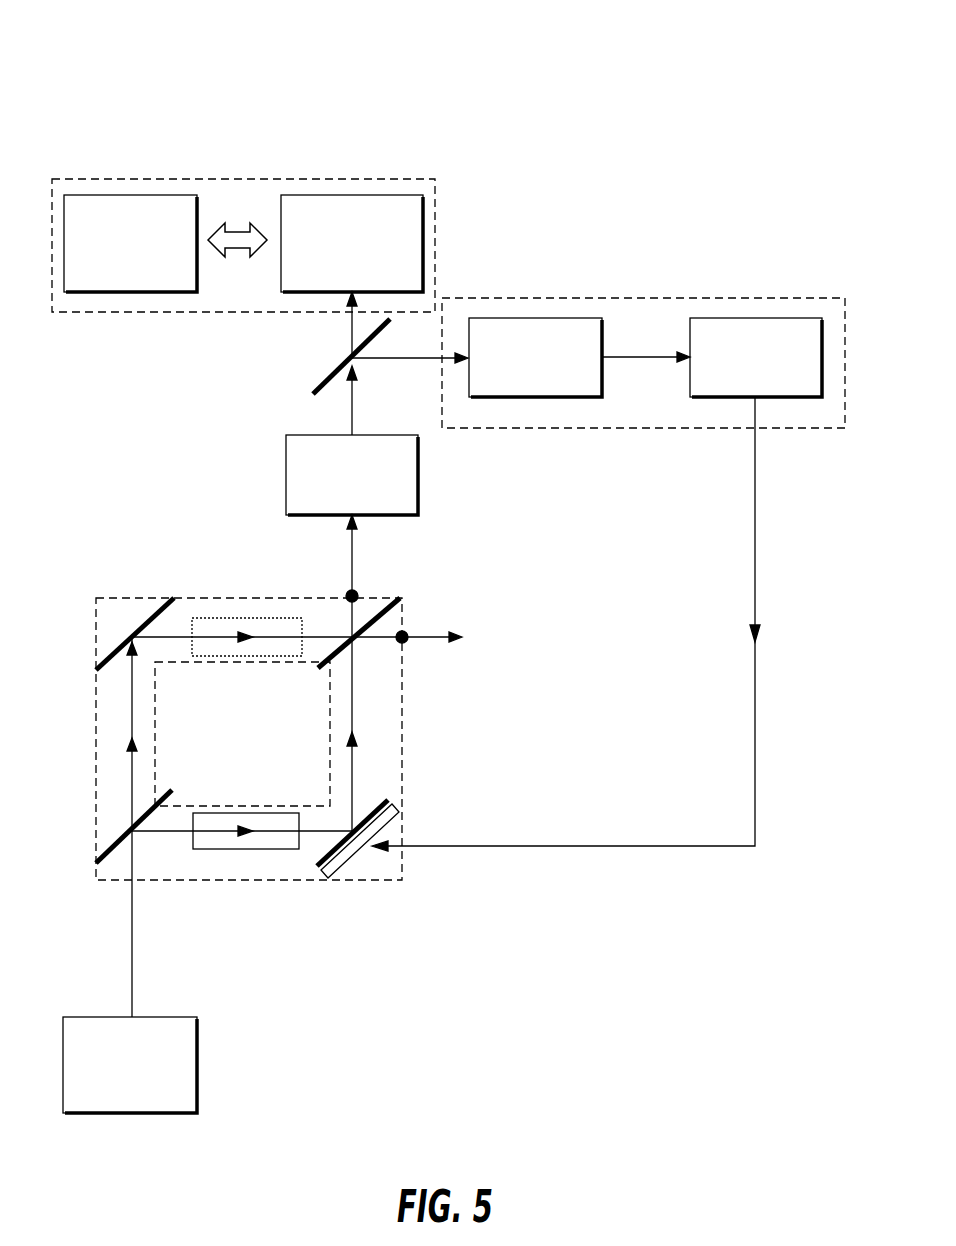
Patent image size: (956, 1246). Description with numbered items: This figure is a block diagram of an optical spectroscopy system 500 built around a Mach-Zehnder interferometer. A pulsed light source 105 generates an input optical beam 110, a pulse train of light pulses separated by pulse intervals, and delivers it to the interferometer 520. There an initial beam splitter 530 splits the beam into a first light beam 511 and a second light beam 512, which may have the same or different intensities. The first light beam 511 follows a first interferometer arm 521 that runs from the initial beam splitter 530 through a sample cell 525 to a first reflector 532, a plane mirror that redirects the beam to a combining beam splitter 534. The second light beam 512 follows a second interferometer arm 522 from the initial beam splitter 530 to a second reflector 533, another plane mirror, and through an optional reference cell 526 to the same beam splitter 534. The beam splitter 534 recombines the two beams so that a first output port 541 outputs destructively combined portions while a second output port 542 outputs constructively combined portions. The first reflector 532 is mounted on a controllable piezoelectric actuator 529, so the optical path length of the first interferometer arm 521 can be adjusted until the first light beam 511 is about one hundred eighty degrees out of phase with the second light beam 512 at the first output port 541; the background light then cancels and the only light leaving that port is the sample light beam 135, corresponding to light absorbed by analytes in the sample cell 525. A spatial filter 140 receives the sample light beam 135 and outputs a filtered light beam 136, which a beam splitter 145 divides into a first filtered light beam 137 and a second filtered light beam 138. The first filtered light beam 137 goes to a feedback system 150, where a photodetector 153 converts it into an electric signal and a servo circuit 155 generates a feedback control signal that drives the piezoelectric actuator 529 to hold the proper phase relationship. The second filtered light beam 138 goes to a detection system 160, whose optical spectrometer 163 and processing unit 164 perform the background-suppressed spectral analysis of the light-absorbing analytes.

The optical spectroscopy system 500 is at (460, 46).
The detection system 160 is at (205, 179).
The processing unit 164 is at (125, 195).
The optical spectrometer 163 is at (360, 195).
The feedback system 150 is at (787, 298).
The photodetector 153 is at (542, 318).
The servo circuit 155 is at (725, 318).
The second filtered light beam 138 is at (352, 323).
The beam splitter 145 is at (330, 371).
The filtered light beam 136 is at (352, 410).
The first filtered light beam 137 is at (393, 362).
The spatial filter 140 is at (286, 462).
The sample light beam 135 is at (352, 556).
The interferometer 520 is at (262, 714).
The second interferometer arm 522 is at (125, 598).
The first interferometer arm 521 is at (262, 880).
The reference cell 526 is at (247, 618).
The sample cell 525 is at (255, 813).
The second light beam 512 is at (132, 723).
The first light beam 511 is at (155, 833).
The second reflector 533 is at (110, 650).
The initial beam splitter 530 is at (110, 845).
The beam splitter 534 is at (388, 617).
The first output port 541 is at (346, 592).
The second output port 542 is at (407, 643).
The first reflector 532 is at (368, 810).
The piezoelectric actuator 529 is at (345, 857).
The input optical beam 110 is at (133, 978).
The pulsed light source 105 is at (98, 1017).